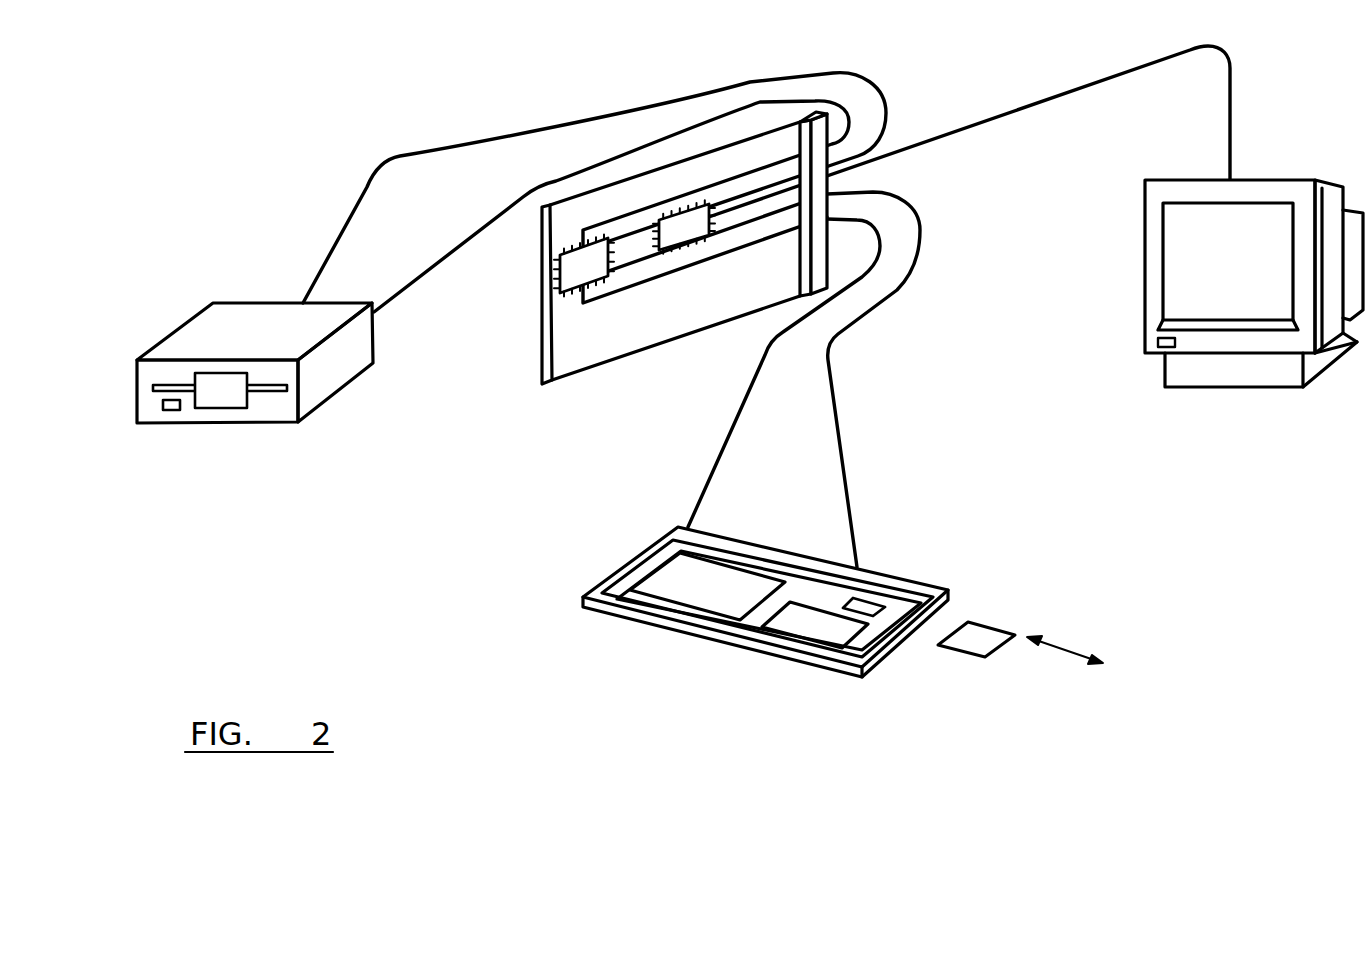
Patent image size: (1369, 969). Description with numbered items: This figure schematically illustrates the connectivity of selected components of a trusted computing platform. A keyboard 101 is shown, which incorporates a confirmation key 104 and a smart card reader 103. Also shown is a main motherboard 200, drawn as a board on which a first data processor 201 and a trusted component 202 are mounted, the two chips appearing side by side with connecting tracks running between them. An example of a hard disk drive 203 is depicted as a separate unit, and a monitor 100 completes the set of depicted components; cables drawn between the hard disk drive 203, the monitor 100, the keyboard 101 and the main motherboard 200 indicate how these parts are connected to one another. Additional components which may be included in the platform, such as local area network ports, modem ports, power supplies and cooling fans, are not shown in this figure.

The monitor 100 is at (1228, 378).
The keyboard 101 is at (807, 628).
The smart card reader 103 is at (950, 600).
The confirmation key 104 is at (863, 602).
The main motherboard 200 is at (582, 345).
The first data processor 201 is at (573, 273).
The trusted component 202 is at (680, 233).
The hard disk drive 203 is at (335, 368).